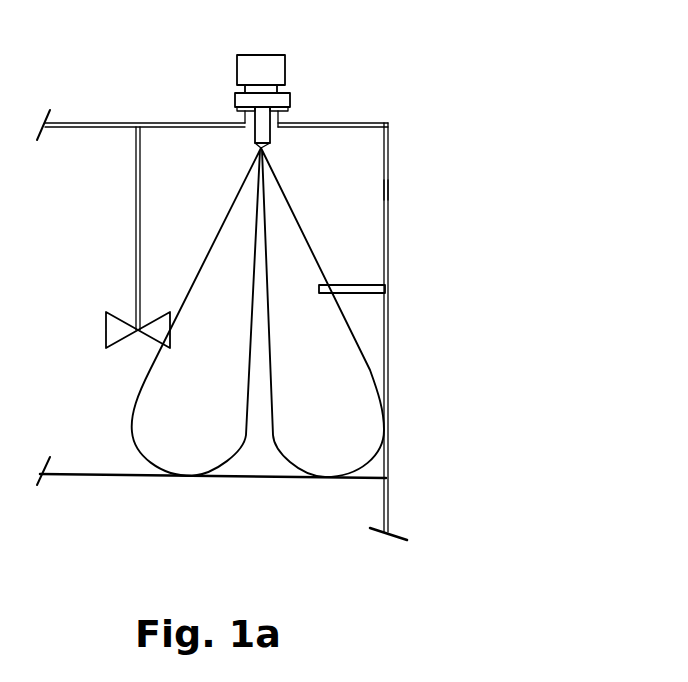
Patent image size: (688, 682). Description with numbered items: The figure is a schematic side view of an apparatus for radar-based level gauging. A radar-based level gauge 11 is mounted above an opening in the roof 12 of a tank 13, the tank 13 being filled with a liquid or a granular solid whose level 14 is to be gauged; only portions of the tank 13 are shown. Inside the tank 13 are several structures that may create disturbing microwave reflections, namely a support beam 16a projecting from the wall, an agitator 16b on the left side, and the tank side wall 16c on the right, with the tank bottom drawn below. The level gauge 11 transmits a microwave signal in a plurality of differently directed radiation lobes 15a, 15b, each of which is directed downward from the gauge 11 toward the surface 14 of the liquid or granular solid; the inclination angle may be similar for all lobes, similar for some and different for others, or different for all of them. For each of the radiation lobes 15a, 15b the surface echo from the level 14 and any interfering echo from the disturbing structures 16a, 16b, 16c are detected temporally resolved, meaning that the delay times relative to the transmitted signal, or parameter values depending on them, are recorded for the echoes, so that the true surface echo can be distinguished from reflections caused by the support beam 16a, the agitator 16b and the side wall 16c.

The radar-based level gauge 11 is at (310, 49).
The roof 12 is at (88, 123).
The tank 13 is at (414, 116).
The level 14 is at (102, 473).
The radiation lobe 15a is at (235, 190).
The radiation lobe 15b is at (285, 193).
The support beam 16a is at (342, 283).
The agitator 16b is at (106, 325).
The tank side wall 16c is at (388, 188).